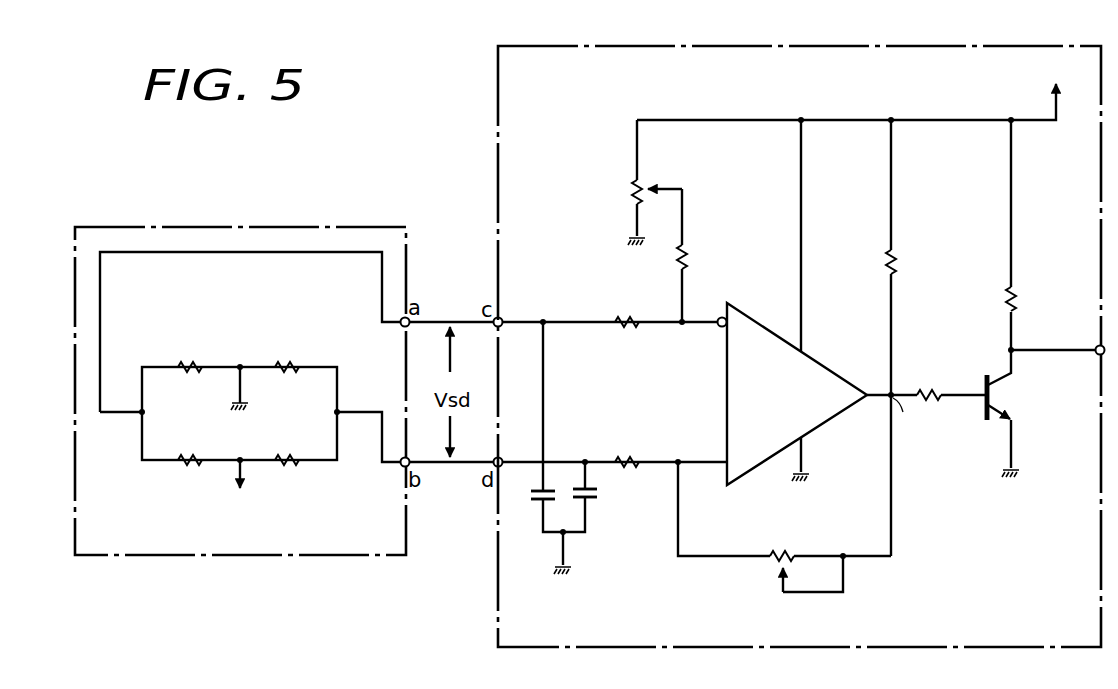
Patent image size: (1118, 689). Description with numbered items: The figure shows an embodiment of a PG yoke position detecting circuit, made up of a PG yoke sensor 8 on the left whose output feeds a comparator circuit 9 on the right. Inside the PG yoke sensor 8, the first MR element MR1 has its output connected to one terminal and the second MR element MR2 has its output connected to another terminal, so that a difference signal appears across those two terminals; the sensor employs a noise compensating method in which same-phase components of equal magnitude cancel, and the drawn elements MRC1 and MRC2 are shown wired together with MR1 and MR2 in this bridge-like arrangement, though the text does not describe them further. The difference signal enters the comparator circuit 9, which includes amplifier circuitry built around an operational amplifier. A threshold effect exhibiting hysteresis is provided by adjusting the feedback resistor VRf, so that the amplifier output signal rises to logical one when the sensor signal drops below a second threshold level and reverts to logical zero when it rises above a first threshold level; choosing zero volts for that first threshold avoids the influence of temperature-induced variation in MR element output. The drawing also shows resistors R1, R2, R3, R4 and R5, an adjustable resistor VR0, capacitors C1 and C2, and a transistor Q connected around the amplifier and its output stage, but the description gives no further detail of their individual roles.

The PG yoke sensor 8 is at (240, 371).
The comparator circuit 9 is at (961, 46).
The magnetoresistive compensating element MRC1 is at (190, 378).
The magnetoresistive compensating element MRC2 is at (288, 378).
The MR element MR1 is at (196, 448).
The MR element MR2 is at (287, 440).
The resistor R1 is at (627, 315).
The resistor R2 is at (694, 259).
The resistor R3 is at (902, 264).
The resistor R4 is at (927, 383).
The resistor R5 is at (1021, 300).
The variable resistor (offset) VR0 is at (631, 191).
The feedback resistor VRf is at (783, 544).
The capacitor C1 is at (527, 497).
The capacitor C2 is at (599, 496).
The transistor Q is at (1002, 397).